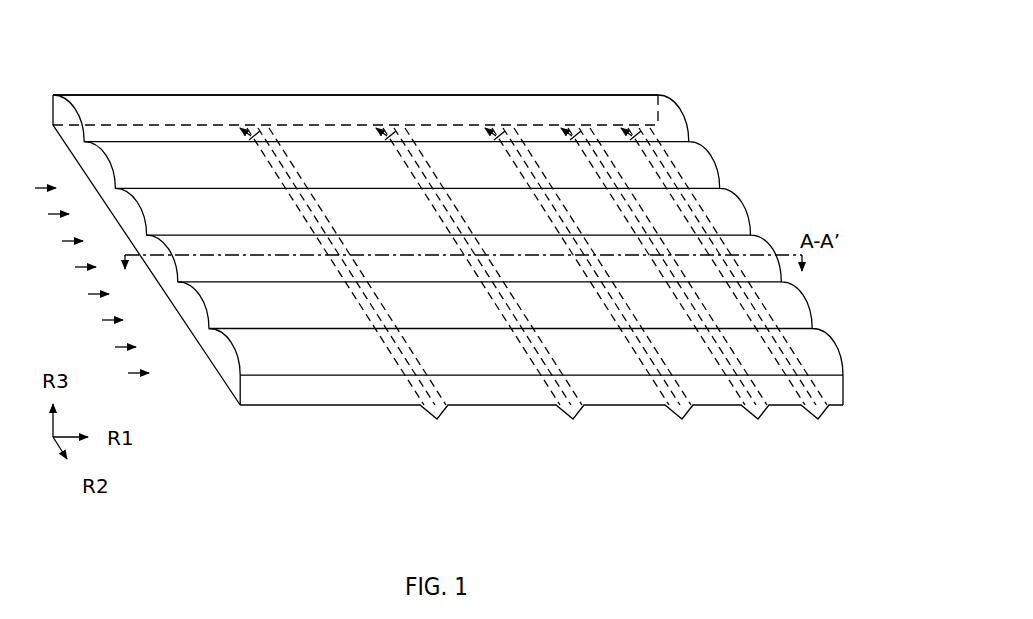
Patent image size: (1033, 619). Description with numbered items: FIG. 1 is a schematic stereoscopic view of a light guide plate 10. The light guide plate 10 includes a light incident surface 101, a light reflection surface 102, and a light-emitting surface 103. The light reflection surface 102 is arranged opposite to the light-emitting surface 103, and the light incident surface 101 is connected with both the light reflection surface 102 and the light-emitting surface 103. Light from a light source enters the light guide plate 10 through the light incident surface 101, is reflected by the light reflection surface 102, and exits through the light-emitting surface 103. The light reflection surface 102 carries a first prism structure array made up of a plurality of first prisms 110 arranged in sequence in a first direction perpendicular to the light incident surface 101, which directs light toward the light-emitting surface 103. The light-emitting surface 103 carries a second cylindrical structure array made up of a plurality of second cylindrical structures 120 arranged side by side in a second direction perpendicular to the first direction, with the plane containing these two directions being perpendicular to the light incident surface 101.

The light guide plate 10 is at (448, 256).
The light incident surface 101 is at (222, 360).
The light reflection surface 102 is at (292, 125).
The light-emitting surface 103 is at (345, 95).
The first prisms 110 is at (765, 413).
The second cylindrical structures 120 is at (738, 198).